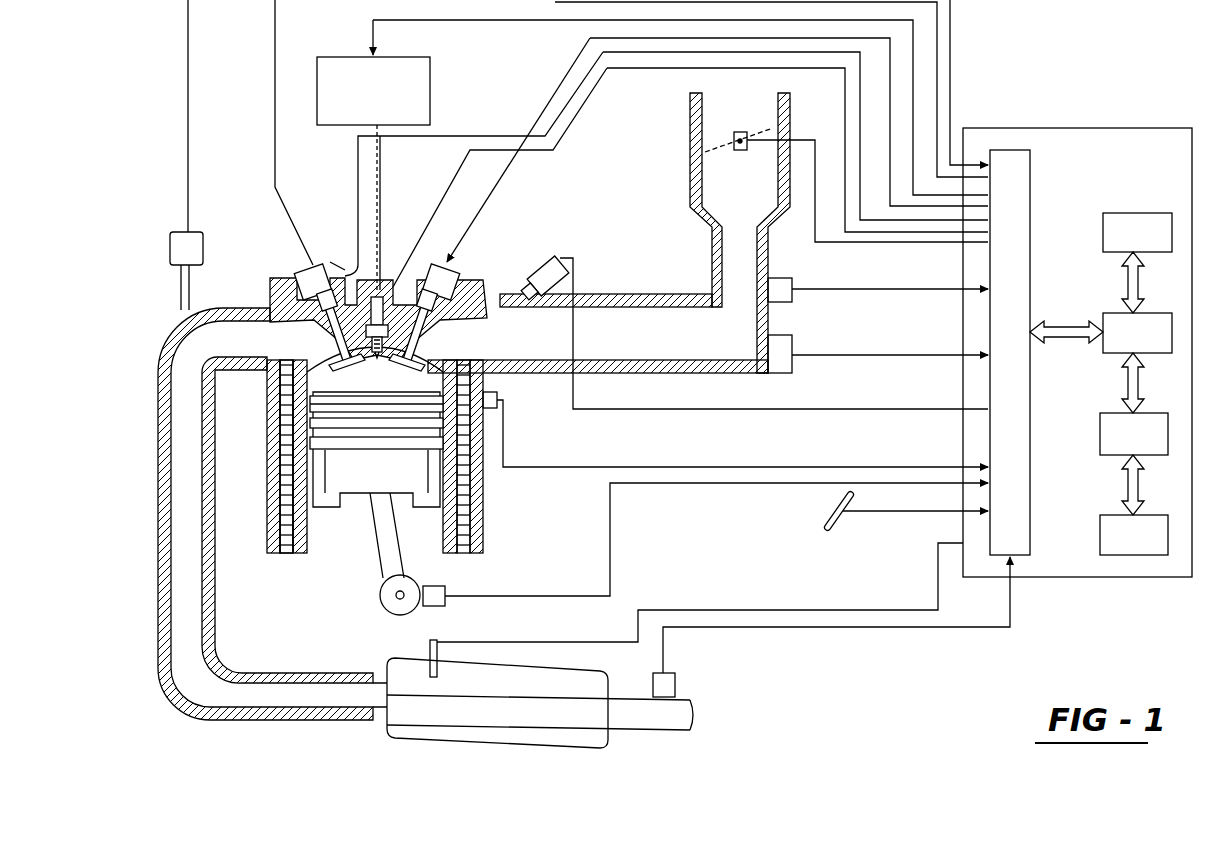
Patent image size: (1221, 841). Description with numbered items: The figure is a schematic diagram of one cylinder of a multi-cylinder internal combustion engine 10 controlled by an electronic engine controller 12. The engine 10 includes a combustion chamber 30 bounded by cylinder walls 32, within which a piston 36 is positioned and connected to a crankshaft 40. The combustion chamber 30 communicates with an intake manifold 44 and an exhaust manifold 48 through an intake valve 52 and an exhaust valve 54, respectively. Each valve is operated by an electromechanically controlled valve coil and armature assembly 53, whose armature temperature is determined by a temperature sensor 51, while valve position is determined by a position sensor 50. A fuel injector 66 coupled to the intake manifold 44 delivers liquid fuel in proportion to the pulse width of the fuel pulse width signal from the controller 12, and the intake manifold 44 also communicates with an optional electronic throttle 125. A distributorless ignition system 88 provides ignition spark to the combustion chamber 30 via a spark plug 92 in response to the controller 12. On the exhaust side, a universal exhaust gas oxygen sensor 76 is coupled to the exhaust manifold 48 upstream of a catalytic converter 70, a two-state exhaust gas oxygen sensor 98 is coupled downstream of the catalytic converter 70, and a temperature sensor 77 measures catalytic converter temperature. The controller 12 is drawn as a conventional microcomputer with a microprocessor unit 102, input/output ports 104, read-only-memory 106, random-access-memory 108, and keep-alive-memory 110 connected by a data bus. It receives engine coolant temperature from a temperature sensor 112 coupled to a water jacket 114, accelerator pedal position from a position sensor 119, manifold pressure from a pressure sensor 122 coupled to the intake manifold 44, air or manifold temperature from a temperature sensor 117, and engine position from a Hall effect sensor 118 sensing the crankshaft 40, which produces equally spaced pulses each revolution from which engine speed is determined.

The internal combustion engine 10 is at (268, 280).
The electronic engine controller 12 is at (1077, 321).
The combustion chamber 30 is at (327, 421).
The cylinder walls 32 is at (300, 553).
The piston 36 is at (368, 480).
The crankshaft 40 is at (380, 600).
The intake manifold 44 is at (702, 344).
The exhaust manifold 48 is at (185, 402).
The position sensor 50 is at (337, 263).
The temperature sensor 51 is at (397, 263).
The intake valve 52 is at (440, 345).
The electromechanically controlled valve coil and armature assembly 53 is at (310, 263).
The exhaust valve 54 is at (325, 346).
The fuel injector 66 is at (518, 265).
The catalytic converter 70 is at (455, 745).
The universal exhaust gas oxygen sensor 76 is at (170, 246).
The temperature sensor 77 is at (425, 665).
The distributorless ignition system 88 is at (432, 93).
The spark plug 92 is at (380, 274).
The two-state exhaust gas oxygen sensor 98 is at (687, 672).
The microprocessor unit 102 is at (1108, 313).
The input/output ports 104 is at (1032, 173).
The read-only-memory 106 is at (1140, 212).
The random-access-memory 108 is at (1102, 413).
The keep-alive-memory 110 is at (1102, 515).
The temperature sensor 112 is at (500, 400).
The water jacket 114 is at (283, 552).
The temperature sensor 117 is at (790, 280).
The Hall effect sensor 118 is at (440, 607).
The position sensor 119 is at (826, 523).
The pressure sensor 122 is at (792, 350).
The electronic throttle 125 is at (733, 125).